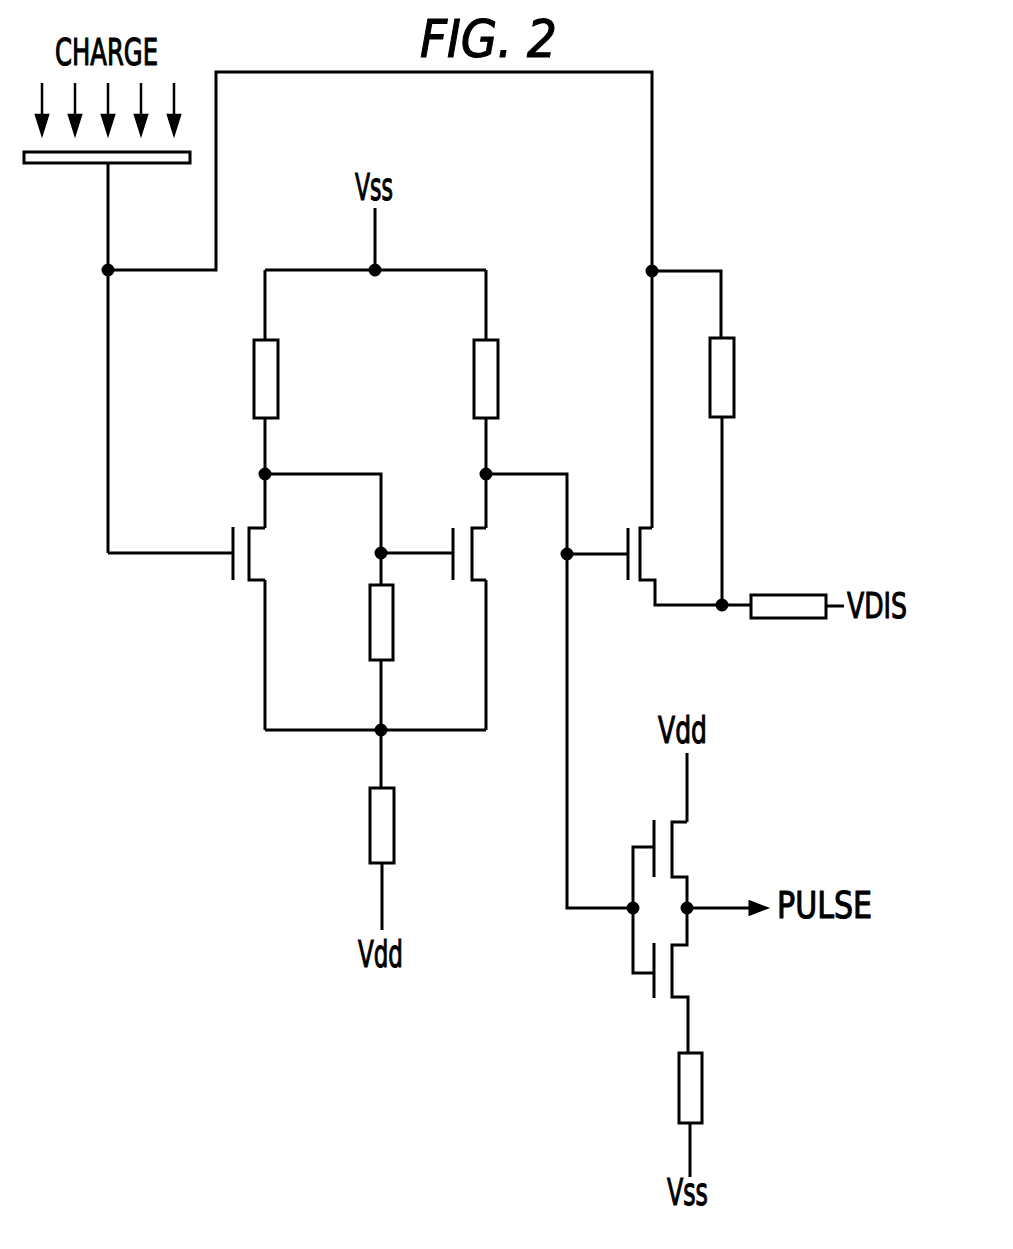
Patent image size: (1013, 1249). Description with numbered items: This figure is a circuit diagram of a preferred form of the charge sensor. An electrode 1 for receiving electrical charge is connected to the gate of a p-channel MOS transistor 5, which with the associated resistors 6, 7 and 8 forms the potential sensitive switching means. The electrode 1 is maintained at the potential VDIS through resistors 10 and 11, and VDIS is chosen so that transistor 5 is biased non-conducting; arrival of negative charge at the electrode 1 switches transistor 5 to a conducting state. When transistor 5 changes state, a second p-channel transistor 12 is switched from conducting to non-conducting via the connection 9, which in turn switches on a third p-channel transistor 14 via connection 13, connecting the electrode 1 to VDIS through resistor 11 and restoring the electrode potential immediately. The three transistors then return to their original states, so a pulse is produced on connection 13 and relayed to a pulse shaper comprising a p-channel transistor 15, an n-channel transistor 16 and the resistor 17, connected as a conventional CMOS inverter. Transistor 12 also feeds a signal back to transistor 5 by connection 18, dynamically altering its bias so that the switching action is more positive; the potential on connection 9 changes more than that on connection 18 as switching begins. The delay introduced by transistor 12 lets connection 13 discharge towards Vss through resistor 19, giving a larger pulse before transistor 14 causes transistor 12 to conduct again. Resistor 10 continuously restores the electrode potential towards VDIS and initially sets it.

The electrode 1 is at (58, 166).
The p-channel MOS transistor 5 is at (233, 537).
The resistor 6 is at (254, 388).
The resistor 7 is at (370, 633).
The resistor 8 is at (370, 840).
The connection 9 is at (330, 474).
The resistor 10 is at (758, 352).
The resistor 11 is at (788, 595).
The second p-channel transistor 12 is at (452, 538).
The connection 13 is at (535, 474).
The third p-channel transistor 14 is at (627, 535).
The p-channel transistor 15 is at (672, 845).
The n-channel transistor 16 is at (652, 988).
The resistor 17 is at (702, 1092).
The connection 18 is at (447, 730).
The resistor 19 is at (498, 355).